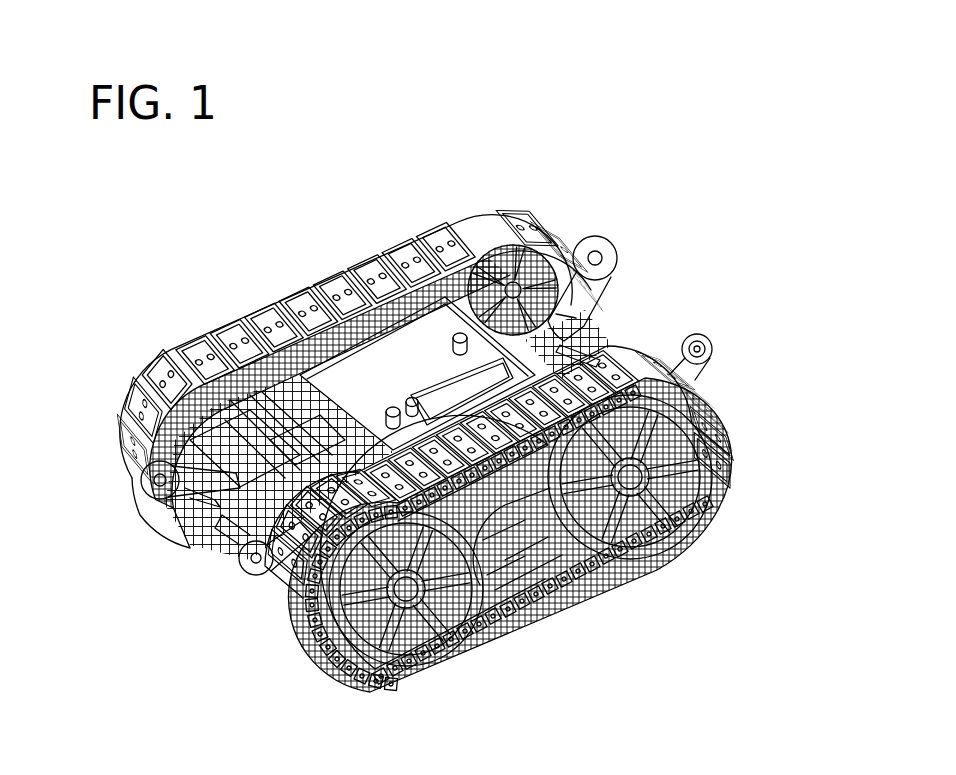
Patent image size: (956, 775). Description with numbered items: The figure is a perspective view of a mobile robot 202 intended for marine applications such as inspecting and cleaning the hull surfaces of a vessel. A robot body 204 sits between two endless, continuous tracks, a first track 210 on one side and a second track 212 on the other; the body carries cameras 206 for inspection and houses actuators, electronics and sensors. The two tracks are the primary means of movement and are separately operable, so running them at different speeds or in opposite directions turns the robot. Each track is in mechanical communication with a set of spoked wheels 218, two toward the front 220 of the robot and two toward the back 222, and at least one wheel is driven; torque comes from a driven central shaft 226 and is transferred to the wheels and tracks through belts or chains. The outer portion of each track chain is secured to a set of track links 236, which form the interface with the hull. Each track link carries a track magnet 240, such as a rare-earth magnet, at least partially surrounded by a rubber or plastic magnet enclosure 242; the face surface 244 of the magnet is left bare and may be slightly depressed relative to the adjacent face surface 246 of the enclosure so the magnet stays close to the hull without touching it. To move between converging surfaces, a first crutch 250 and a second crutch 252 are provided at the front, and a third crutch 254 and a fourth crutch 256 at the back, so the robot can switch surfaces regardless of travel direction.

The mobile robot 202 is at (573, 108).
The robot body 204 is at (400, 352).
The cameras 206 is at (243, 420).
The first track 210 is at (293, 313).
The second track 212 is at (529, 535).
The wheels 218 is at (683, 507).
The front 220 is at (307, 342).
The back 222 is at (605, 336).
The driven central shaft 226 is at (503, 522).
The track links 236 is at (297, 593).
The track magnet 240 is at (252, 347).
The magnet enclosure 242 is at (240, 337).
The face surface of the track magnet 244 is at (351, 276).
The face surface of the magnet enclosure 246 is at (370, 282).
The first crutch 250 is at (163, 490).
The second crutch 252 is at (267, 565).
The third crutch 254 is at (600, 270).
The fourth crutch 256 is at (697, 360).